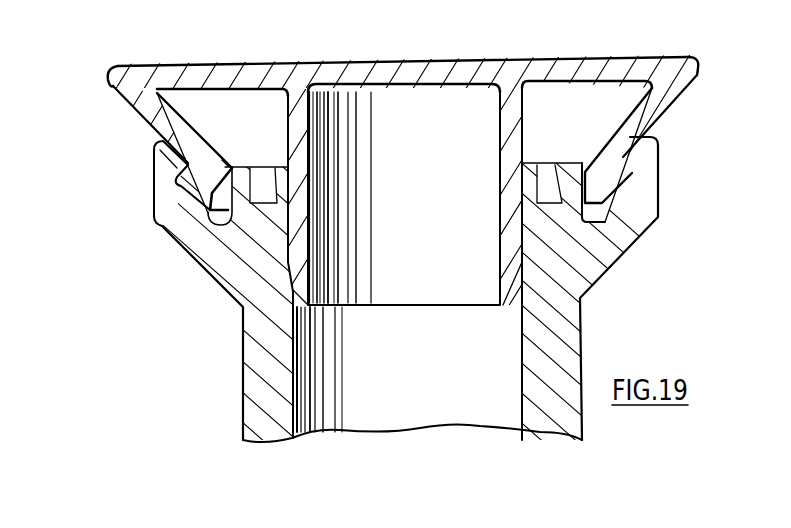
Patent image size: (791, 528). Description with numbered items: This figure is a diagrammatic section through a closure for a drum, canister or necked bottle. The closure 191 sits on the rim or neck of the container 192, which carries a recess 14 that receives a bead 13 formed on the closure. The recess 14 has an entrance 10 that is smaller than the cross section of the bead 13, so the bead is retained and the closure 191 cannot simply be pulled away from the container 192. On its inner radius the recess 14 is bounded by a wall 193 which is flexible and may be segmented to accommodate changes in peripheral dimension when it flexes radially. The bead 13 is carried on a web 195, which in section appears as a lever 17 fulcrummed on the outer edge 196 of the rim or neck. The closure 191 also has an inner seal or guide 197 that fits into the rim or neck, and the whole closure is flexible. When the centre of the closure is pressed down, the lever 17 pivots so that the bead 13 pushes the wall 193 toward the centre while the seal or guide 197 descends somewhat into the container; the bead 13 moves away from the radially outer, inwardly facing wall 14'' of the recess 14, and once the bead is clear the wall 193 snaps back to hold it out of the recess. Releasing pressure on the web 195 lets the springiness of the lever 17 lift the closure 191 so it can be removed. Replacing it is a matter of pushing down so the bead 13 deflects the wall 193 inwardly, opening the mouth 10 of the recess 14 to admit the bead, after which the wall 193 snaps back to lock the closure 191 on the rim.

The entrance 10 is at (225, 156).
The bead 13 is at (153, 218).
The recess 14 is at (176, 235).
The radially outer, inwardly facing wall 14'' is at (124, 203).
The lever 17 is at (178, 133).
The closure 191 is at (277, 65).
The container 192 is at (252, 382).
The wall 193 is at (236, 166).
The web 195 is at (433, 67).
The outer edge 196 is at (172, 163).
The inner seal or guide 197 is at (308, 157).